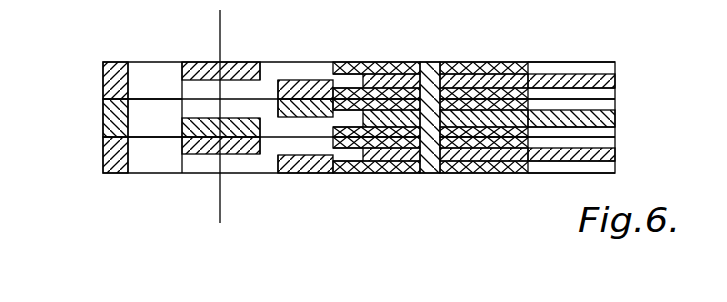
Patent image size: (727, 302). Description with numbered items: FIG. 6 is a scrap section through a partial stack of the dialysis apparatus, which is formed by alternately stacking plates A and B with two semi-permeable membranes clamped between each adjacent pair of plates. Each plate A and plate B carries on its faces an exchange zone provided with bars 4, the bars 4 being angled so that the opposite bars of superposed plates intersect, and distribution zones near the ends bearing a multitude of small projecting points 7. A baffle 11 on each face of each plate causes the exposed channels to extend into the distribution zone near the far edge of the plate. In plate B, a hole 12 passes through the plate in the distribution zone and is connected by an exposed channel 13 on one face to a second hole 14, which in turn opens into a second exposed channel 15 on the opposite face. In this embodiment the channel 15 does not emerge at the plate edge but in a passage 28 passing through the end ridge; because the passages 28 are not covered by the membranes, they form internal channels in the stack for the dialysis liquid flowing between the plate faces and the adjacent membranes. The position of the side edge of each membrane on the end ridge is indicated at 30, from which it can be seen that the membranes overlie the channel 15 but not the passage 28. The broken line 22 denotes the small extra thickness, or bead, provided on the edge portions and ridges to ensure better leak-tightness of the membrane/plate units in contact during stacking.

The bars 4 is at (580, 107).
The small projecting points 7 is at (380, 62).
The baffle 11 is at (445, 72).
The hole 12 is at (350, 110).
The exposed channel 13 is at (323, 84).
The second hole 14 is at (270, 123).
The second exposed channel 15 is at (236, 90).
The broken line 22 is at (115, 61).
The passage 28 is at (143, 115).
The position of membrane side edge 30 is at (217, 202).
The plate A is at (100, 117).
The plate B is at (100, 80).